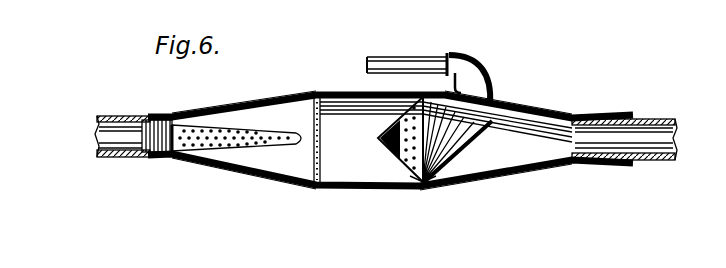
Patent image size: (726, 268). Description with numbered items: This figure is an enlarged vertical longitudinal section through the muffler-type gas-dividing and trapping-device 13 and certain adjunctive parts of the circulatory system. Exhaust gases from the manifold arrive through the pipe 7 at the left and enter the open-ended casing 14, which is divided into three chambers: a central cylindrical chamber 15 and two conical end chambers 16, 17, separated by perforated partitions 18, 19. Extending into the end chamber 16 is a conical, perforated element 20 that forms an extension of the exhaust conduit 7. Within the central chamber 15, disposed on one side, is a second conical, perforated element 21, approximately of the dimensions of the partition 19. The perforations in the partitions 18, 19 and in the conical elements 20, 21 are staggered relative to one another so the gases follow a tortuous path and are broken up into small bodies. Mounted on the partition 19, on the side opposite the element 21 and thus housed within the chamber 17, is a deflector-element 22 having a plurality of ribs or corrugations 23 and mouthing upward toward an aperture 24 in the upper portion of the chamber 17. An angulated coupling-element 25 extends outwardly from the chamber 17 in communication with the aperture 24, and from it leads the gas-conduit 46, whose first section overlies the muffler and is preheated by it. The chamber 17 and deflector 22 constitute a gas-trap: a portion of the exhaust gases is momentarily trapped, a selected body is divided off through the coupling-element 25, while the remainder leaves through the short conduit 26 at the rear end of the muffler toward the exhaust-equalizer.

The pipe 7 is at (115, 117).
The gas-dividing and trapping-device 13 is at (300, 85).
The open-ended casing 14 is at (423, 185).
The central cylindrical chamber 15 is at (360, 165).
The conical end chamber 16 is at (292, 165).
The conical end chamber 17 is at (543, 147).
The perforated partition 18 is at (314, 178).
The perforated partition 19 is at (413, 188).
The conical perforated element 20 is at (288, 141).
The conical perforated element 21 is at (389, 167).
The deflector-element 22 is at (447, 182).
The ribs or corrugations 23 is at (463, 120).
The aperture 24 is at (433, 91).
The angulated coupling-element 25 is at (460, 97).
The short conduit 26 is at (648, 119).
The gas-conduit 46 is at (368, 63).